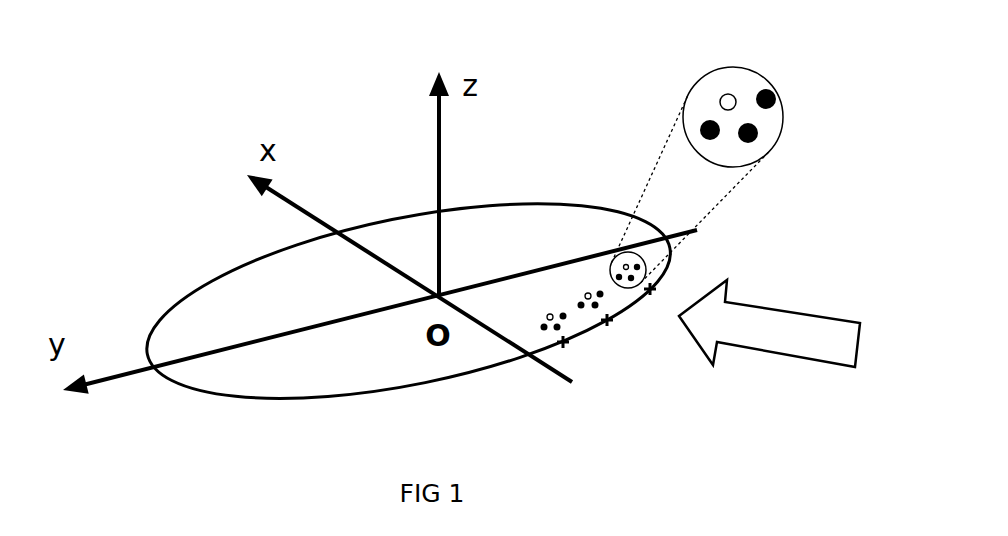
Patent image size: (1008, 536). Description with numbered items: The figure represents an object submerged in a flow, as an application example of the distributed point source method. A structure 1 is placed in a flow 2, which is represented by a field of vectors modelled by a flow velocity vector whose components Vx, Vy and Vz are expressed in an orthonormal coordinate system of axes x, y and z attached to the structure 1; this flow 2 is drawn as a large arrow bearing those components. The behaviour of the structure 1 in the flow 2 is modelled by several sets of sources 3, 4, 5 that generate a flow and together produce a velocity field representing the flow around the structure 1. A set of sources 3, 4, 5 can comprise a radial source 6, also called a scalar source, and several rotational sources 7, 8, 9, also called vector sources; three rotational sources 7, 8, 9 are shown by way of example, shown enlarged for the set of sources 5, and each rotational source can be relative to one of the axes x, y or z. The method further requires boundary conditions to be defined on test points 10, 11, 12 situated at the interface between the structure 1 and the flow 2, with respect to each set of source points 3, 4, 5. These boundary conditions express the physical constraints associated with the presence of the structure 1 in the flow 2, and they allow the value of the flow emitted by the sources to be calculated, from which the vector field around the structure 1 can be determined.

The structure 1 is at (210, 282).
The flow 2 is at (767, 355).
The set of sources 3 is at (532, 303).
The set of sources 4 is at (574, 278).
The set of sources 5 is at (789, 150).
The radial source 6 is at (727, 95).
The rotational source 7 is at (772, 97).
The rotational source 8 is at (756, 131).
The rotational source 9 is at (709, 124).
The test point 10 is at (565, 343).
The test point 11 is at (607, 325).
The test point 12 is at (650, 292).